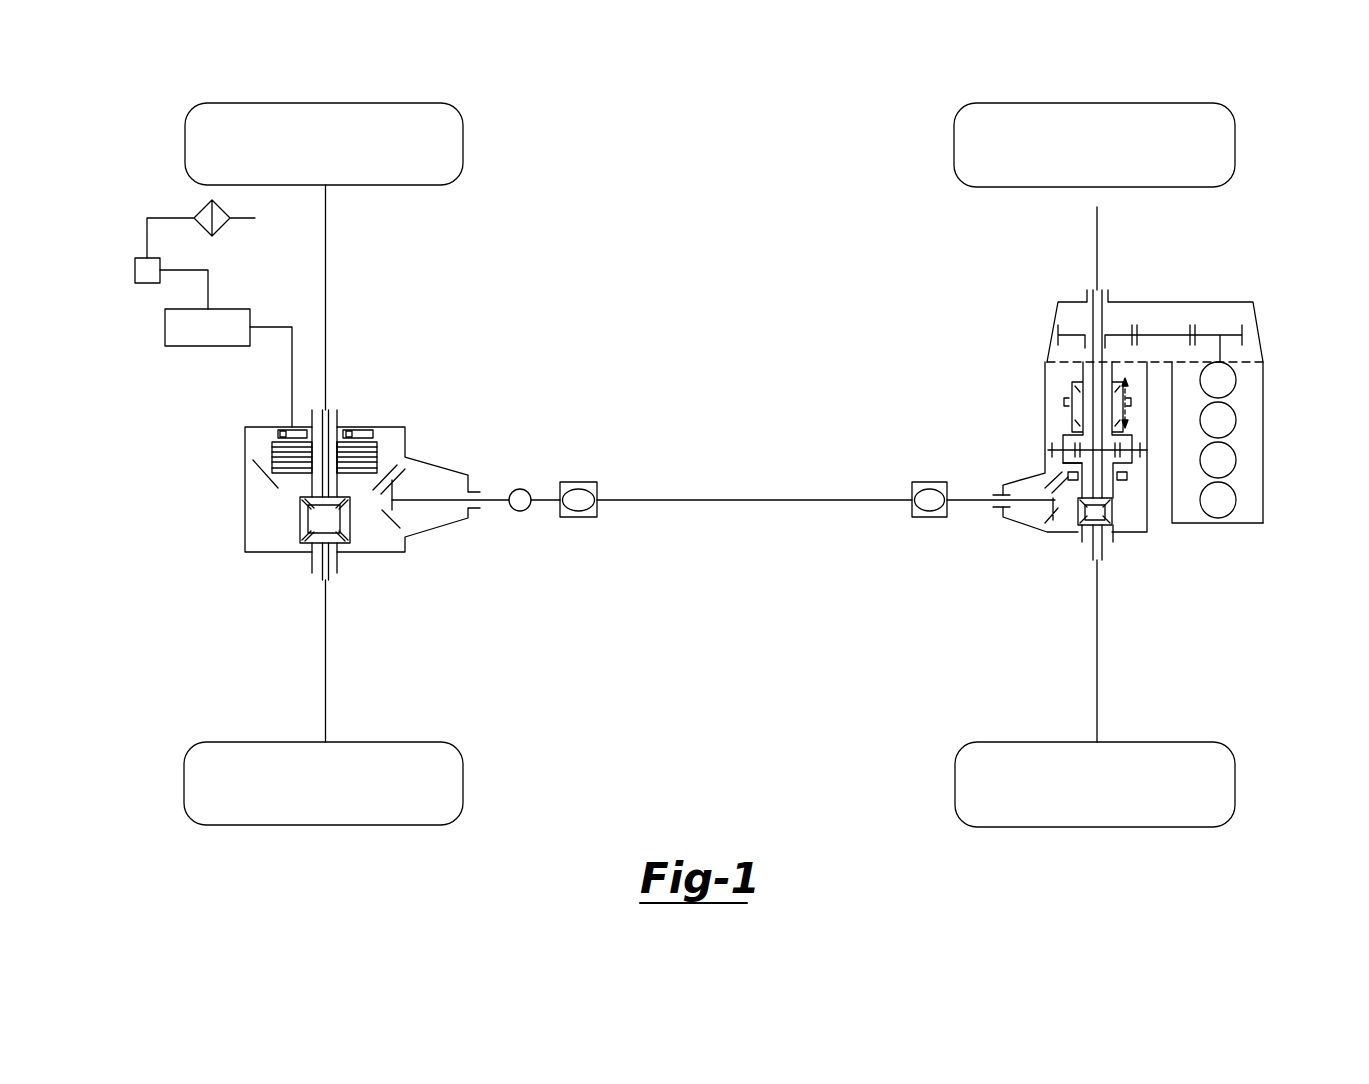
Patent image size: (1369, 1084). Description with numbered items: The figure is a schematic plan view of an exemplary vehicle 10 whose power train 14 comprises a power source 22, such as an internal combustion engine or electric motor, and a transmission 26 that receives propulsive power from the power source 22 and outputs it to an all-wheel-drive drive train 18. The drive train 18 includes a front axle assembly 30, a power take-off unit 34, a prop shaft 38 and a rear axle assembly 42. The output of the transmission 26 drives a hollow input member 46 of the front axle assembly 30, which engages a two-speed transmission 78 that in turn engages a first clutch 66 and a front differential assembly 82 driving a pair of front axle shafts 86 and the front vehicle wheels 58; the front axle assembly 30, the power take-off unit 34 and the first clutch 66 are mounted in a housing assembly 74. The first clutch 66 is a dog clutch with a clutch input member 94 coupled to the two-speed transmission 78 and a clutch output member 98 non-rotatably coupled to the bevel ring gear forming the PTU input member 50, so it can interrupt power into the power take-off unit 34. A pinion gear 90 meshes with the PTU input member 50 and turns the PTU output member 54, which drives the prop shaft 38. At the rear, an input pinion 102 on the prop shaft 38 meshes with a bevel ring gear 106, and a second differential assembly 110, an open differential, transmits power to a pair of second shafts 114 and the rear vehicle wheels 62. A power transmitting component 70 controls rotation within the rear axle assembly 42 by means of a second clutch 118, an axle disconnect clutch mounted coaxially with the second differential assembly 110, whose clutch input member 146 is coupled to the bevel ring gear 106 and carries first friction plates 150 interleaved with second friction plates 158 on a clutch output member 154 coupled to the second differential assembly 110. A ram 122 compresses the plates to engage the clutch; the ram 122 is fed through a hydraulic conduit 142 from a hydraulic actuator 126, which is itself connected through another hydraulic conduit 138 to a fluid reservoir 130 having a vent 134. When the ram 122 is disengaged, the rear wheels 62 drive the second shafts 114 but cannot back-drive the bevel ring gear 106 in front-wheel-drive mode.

The vehicle 10 is at (158, 810).
The power train 14 is at (1290, 405).
The drive train 18 is at (740, 428).
The power source 22 is at (1252, 512).
The transmission 26 is at (1253, 310).
The front axle assembly 30 is at (1066, 565).
The power take-off unit 34 is at (1020, 538).
The prop shaft 38 is at (632, 500).
The rear axle assembly 42 is at (216, 405).
The input member 46 is at (1085, 350).
The PTU input member 50 is at (1068, 478).
The PTU output member 54 is at (965, 500).
The front vehicle wheels 58 is at (955, 150).
The rear vehicle wheels 62 is at (185, 150).
The first clutch 66 is at (1132, 478).
The power transmitting component 70 is at (390, 437).
The housing assembly 74 is at (1125, 517).
The two-speed transmission 78 is at (1055, 428).
The front differential assembly 82 is at (1122, 530).
The front axle shafts 86 is at (1097, 243).
The pinion gear 90 is at (1003, 517).
The clutch input member 94 is at (1072, 470).
The clutch output member 98 is at (1128, 488).
The input pinion 102 is at (397, 527).
The bevel ring gear 106 is at (266, 476).
The second differential assembly 110 is at (298, 550).
The second shafts 114 is at (327, 243).
The second clutch 118 is at (378, 455).
The ram 122 is at (276, 433).
The hydraulic actuator 126 is at (158, 341).
The fluid reservoir 130 is at (135, 265).
The vent 134 is at (200, 210).
The hydraulic conduit 138 is at (208, 283).
The hydraulic conduit 142 is at (292, 340).
The clutch input member 146 is at (272, 463).
The first friction plates 150 is at (284, 428).
The clutch output member 154 is at (333, 450).
The second friction plates 158 is at (368, 437).